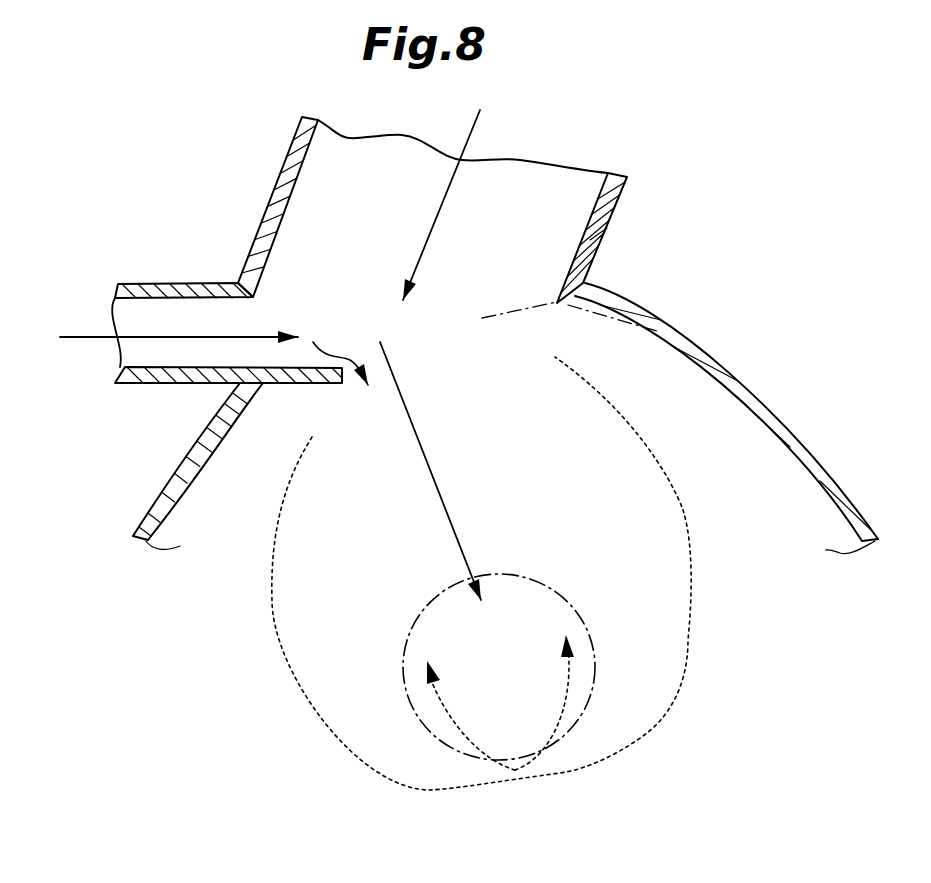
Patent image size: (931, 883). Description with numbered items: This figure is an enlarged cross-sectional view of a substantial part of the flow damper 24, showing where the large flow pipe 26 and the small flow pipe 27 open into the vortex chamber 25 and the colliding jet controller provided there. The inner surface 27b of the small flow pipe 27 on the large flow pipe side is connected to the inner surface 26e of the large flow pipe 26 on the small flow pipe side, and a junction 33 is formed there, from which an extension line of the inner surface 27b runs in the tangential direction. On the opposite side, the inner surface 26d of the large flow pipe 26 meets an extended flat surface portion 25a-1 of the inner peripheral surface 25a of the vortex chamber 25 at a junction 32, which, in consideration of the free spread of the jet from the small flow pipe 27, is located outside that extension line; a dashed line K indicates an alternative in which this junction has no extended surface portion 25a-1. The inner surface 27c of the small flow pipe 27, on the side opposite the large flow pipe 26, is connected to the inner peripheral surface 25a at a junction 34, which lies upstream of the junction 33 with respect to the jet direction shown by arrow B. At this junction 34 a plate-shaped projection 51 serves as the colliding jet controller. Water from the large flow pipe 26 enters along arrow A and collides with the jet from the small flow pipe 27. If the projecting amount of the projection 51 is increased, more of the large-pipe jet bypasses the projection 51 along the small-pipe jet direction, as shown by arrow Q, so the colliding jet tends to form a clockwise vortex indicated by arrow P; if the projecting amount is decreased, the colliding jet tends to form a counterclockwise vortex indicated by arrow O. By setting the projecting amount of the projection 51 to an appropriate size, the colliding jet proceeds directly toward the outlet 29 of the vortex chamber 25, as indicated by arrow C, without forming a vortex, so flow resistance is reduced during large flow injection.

The flow damper 24 is at (653, 168).
The vortex chamber 25 is at (138, 523).
The inner peripheral surface 25a is at (198, 483).
The extended surface portion 25a-1 is at (620, 302).
The large flow pipe 26 is at (627, 183).
The inner surface 26d is at (582, 230).
The inner surface 26e is at (294, 190).
The small flow pipe 27 is at (133, 284).
The inner surface 27b is at (201, 300).
The inner surface 27c is at (184, 368).
The outlet 29 is at (586, 712).
The junction 32 is at (580, 277).
The junction 33 is at (256, 300).
The junction 34 is at (268, 337).
The projection 51 is at (342, 383).
The arrow A is at (470, 132).
The arrow B is at (88, 337).
The arrow C is at (437, 480).
The dashed line K is at (561, 319).
The arrow O is at (270, 605).
The arrow P is at (683, 507).
The arrow Q is at (350, 348).